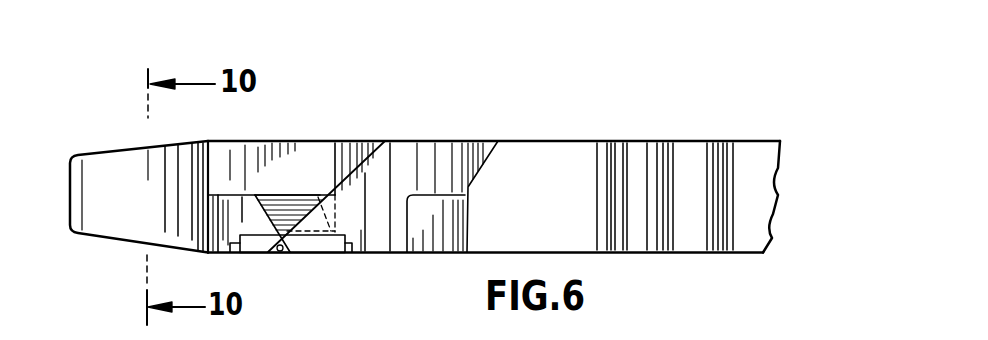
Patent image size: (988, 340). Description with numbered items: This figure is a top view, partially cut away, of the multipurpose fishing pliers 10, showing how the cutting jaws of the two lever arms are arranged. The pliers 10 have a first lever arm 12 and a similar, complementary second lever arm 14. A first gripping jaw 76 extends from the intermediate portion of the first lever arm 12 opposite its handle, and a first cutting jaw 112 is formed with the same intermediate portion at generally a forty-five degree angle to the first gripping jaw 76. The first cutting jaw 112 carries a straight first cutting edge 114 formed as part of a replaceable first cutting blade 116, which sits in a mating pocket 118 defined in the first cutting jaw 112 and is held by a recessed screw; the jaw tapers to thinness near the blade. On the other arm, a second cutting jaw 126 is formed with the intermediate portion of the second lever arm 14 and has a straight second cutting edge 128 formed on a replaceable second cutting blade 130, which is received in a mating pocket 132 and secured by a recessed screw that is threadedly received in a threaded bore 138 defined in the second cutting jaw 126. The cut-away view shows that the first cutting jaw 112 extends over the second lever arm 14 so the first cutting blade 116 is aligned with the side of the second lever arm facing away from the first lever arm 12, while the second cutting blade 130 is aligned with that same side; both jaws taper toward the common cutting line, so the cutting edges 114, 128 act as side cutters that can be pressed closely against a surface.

The multipurpose fishing pliers 10 is at (537, 78).
The first lever arm 12 is at (421, 141).
The second lever arm 14 is at (591, 141).
The first gripping jaw 76 is at (185, 155).
The first cutting jaw 112 is at (353, 197).
The first cutting edge 114 is at (288, 254).
The first cutting blade 116 is at (333, 255).
The mating pocket 118 is at (347, 243).
The second cutting jaw 126 is at (248, 198).
The second cutting edge 128 is at (280, 252).
The second cutting blade 130 is at (260, 253).
The mating pocket 132 is at (220, 252).
The threaded bore 138 is at (293, 195).